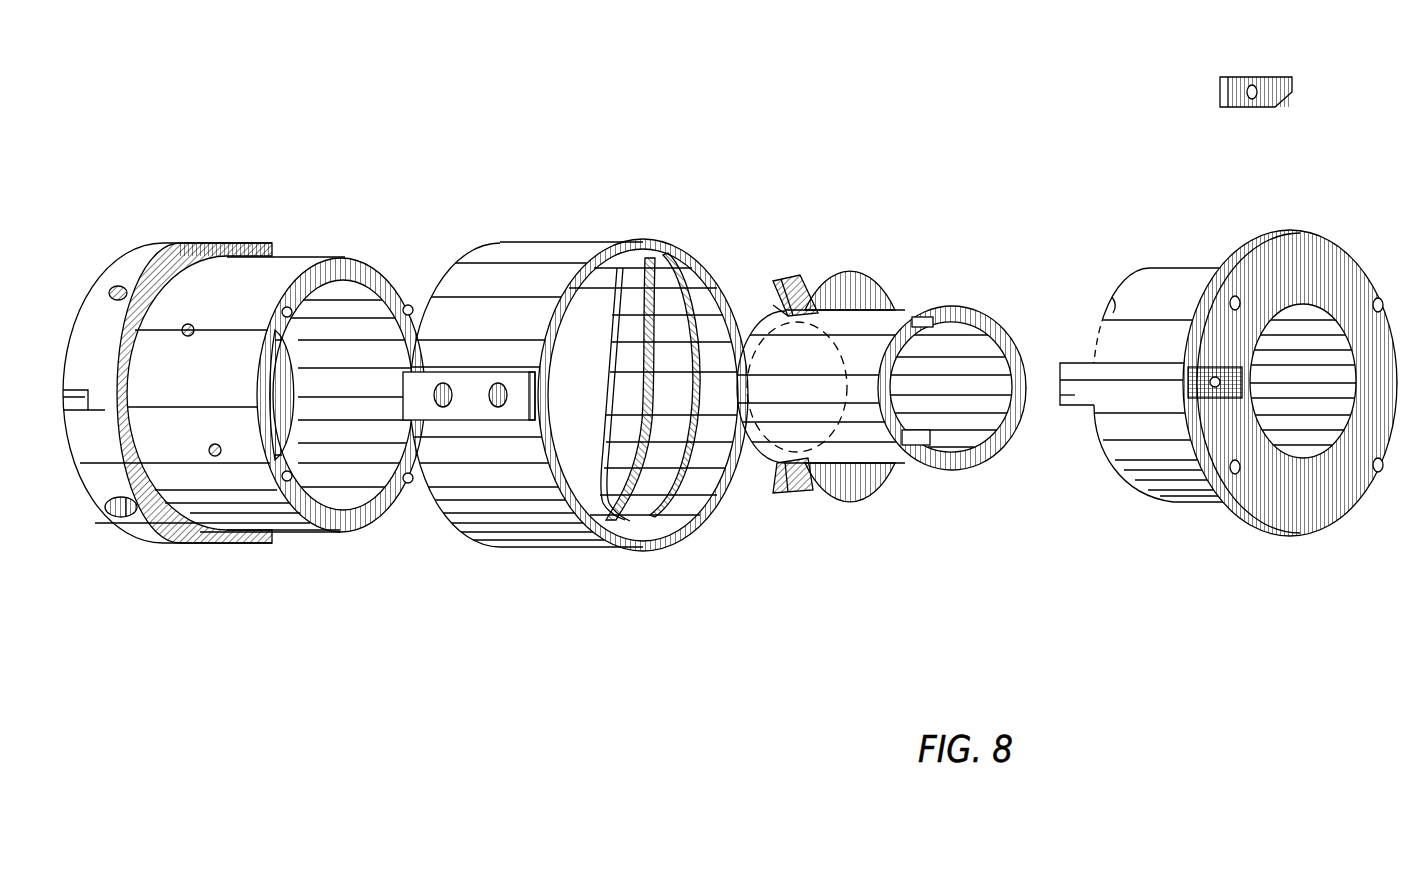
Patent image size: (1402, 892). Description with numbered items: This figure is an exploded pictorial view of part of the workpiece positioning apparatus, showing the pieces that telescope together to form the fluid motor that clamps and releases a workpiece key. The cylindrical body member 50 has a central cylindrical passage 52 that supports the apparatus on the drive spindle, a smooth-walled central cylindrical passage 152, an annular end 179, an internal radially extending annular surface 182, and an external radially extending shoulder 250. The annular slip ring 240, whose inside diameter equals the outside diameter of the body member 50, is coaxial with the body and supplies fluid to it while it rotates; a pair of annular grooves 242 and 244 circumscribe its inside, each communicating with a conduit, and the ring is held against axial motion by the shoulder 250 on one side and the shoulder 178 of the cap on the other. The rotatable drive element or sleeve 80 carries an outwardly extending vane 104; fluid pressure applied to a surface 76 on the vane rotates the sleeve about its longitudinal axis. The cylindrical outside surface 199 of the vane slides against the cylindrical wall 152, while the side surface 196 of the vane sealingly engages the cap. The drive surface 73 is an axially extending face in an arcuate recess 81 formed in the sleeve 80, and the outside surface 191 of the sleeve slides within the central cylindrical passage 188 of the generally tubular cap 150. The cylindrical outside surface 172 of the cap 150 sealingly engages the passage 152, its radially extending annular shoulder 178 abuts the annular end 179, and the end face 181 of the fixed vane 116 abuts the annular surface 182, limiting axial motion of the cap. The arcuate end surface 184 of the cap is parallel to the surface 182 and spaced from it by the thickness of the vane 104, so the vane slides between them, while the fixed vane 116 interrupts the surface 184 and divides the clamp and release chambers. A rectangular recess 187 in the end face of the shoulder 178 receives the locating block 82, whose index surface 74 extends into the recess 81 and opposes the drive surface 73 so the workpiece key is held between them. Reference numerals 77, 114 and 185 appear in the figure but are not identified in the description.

The cylindrical body member 50 is at (269, 424).
The radially extending shoulder 250 is at (228, 248).
The central cylindrical passage 52 is at (285, 374).
The radially extending annular surface 182 is at (334, 397).
The central cylindrical passage 152 is at (388, 312).
The annular end 179 is at (409, 492).
The slip ring 240 is at (575, 445).
The annular groove 242 is at (653, 370).
The annular groove 244 is at (677, 523).
The rotatable drive element or sleeve 80 is at (872, 402).
The key slot 77 is at (773, 305).
The vane 104 is at (800, 275).
The cylindrical outside surface 199 is at (810, 278).
The side surface 196 is at (853, 492).
The surface 76 is at (790, 495).
The outside surface 191 is at (897, 318).
The arcuate recess 81 is at (907, 363).
The drive surface 73 is at (929, 407).
The cap 150 is at (1202, 408).
The cylindrical outside surface 172 is at (1147, 333).
The cap edge 185 is at (1112, 312).
The end face 181 is at (1053, 392).
The key slot 114 is at (1088, 350).
The fixed vane 116 is at (1070, 393).
The arcuate end surface 184 is at (1097, 447).
The radially extending annular shoulder 178 is at (1238, 262).
The rectangular recess 187 is at (1259, 376).
The central cylindrical passage 188 is at (1315, 437).
The index surface 74 is at (1285, 79).
The locating block 82 is at (1238, 76).